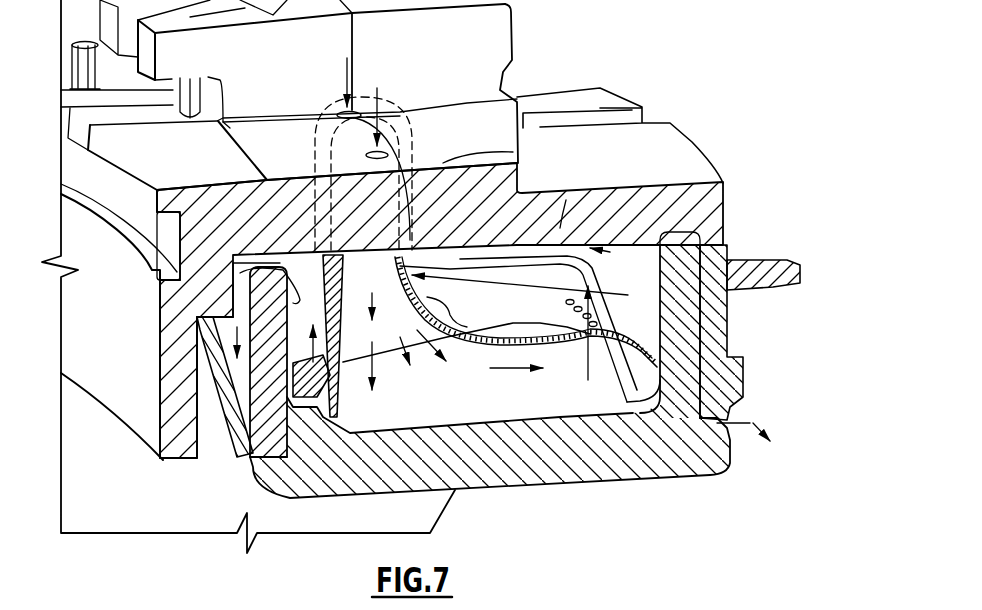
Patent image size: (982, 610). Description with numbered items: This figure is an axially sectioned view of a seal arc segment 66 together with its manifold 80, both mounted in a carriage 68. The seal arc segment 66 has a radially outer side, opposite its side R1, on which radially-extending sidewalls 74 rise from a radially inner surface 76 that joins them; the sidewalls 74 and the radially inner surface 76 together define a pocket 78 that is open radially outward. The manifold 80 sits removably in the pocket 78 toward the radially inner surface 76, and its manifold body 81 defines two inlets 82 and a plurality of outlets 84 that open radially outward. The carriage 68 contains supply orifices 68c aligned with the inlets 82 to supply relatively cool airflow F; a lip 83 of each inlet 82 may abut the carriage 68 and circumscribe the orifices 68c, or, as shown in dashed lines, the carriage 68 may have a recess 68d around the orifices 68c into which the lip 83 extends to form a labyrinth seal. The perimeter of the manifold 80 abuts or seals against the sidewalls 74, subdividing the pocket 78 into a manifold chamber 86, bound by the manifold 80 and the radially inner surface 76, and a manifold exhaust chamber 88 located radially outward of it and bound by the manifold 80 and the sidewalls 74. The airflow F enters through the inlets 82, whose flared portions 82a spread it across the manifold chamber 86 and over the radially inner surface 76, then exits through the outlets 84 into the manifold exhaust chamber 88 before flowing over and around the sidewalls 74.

The seal arc segment 66 is at (706, 481).
The carriage 68 is at (471, 144).
The supply orifices 68c is at (362, 108).
The recess 68d is at (500, 150).
The sidewalls 74 is at (800, 262).
The radially inner surface 76 is at (430, 412).
The pocket 78 is at (700, 315).
The manifold 80 is at (653, 280).
The manifold body 81 is at (473, 313).
The inlet 82 is at (517, 170).
The flare 82a is at (560, 228).
The lip 83 is at (183, 230).
The outlets 84 is at (588, 366).
The manifold chamber 86 is at (503, 388).
The manifold exhaust chamber 88 is at (633, 228).
The radius R1 is at (553, 485).
The airflow F is at (373, 110).